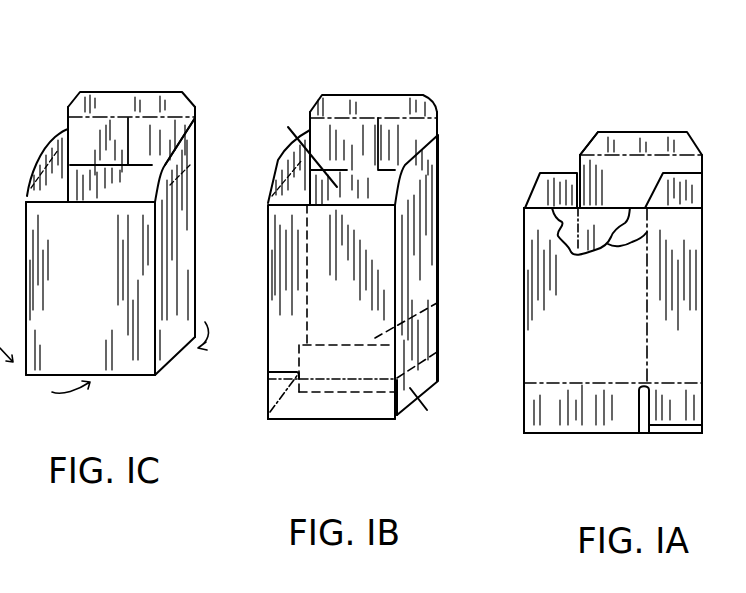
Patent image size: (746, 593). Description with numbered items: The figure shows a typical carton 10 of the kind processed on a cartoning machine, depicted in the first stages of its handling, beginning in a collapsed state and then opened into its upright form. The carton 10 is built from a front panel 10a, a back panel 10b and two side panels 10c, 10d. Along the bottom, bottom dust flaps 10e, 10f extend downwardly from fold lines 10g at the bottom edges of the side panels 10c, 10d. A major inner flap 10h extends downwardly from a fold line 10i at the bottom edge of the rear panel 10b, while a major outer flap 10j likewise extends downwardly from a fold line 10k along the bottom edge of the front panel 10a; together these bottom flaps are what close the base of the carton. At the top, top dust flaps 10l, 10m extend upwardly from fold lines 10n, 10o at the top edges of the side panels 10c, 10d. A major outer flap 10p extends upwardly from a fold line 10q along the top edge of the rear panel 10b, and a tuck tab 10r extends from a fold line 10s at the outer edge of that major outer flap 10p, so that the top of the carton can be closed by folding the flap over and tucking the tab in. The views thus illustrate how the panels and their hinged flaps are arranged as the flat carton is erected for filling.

In FIG. 1A, the carton 10 is at (658, 101).
In FIG. 1C, the front panel 10a is at (100, 325).
In FIG. 1B, the front panel 10a is at (360, 301).
In FIG. 1A, the front panel 10a is at (600, 311).
In FIG. 1B, the back panel 10b is at (300, 140).
In FIG. 1A, the back panel 10b is at (599, 247).
In FIG. 1C, the side panel 10c is at (180, 297).
In FIG. 1B, the side panel 10c is at (438, 268).
In FIG. 1A, the side panel 10c is at (647, 335).
In FIG. 1B, the side panel 10d is at (285, 243).
In FIG. 1A, the side panel 10d is at (548, 231).
In FIG. 1B, the bottom dust flap 10e is at (427, 411).
In FIG. 1A, the bottom dust flap 10e is at (678, 426).
In FIG. 1B, the bottom dust flap 10f is at (260, 402).
In FIG. 1A, the bottom dust flap 10f is at (524, 426).
In FIG. 1B, the fold lines 10g is at (264, 360).
In FIG. 1A, the fold lines 10g is at (652, 380).
In FIG. 1B, the major inner flap 10h is at (332, 352).
In FIG. 1A, the major inner flap 10h is at (652, 434).
In FIG. 1B, the fold line 10i is at (420, 335).
In FIG. 1B, the major outer flap 10j is at (314, 412).
In FIG. 1A, the major outer flap 10j is at (556, 434).
In FIG. 1B, the fold line 10k is at (268, 377).
In FIG. 1A, the fold line 10k is at (540, 383).
In FIG. 1C, the top dust flap 10l is at (175, 160).
In FIG. 1A, the top dust flap 10l is at (695, 183).
In FIG. 1C, the top dust flap 10m is at (52, 153).
In FIG. 1B, the top dust flap 10m is at (289, 166).
In FIG. 1A, the top dust flap 10m is at (548, 187).
In FIG. 1C, the fold line 10n is at (13, 286).
In FIG. 1A, the fold line 10n is at (697, 237).
In FIG. 1A, the fold line 10o is at (538, 206).
In FIG. 1C, the major outer flap 10p is at (175, 127).
In FIG. 1B, the major outer flap 10p is at (392, 120).
In FIG. 1A, the major outer flap 10p is at (590, 168).
In FIG. 1C, the fold line 10q is at (111, 159).
In FIG. 1B, the fold line 10q is at (375, 170).
In FIG. 1A, the fold line 10q is at (610, 210).
In FIG. 1C, the tuck tab 10r is at (114, 99).
In FIG. 1B, the tuck tab 10r is at (348, 95).
In FIG. 1A, the tuck tab 10r is at (622, 133).
In FIG. 1A, the fold line 10s is at (600, 133).